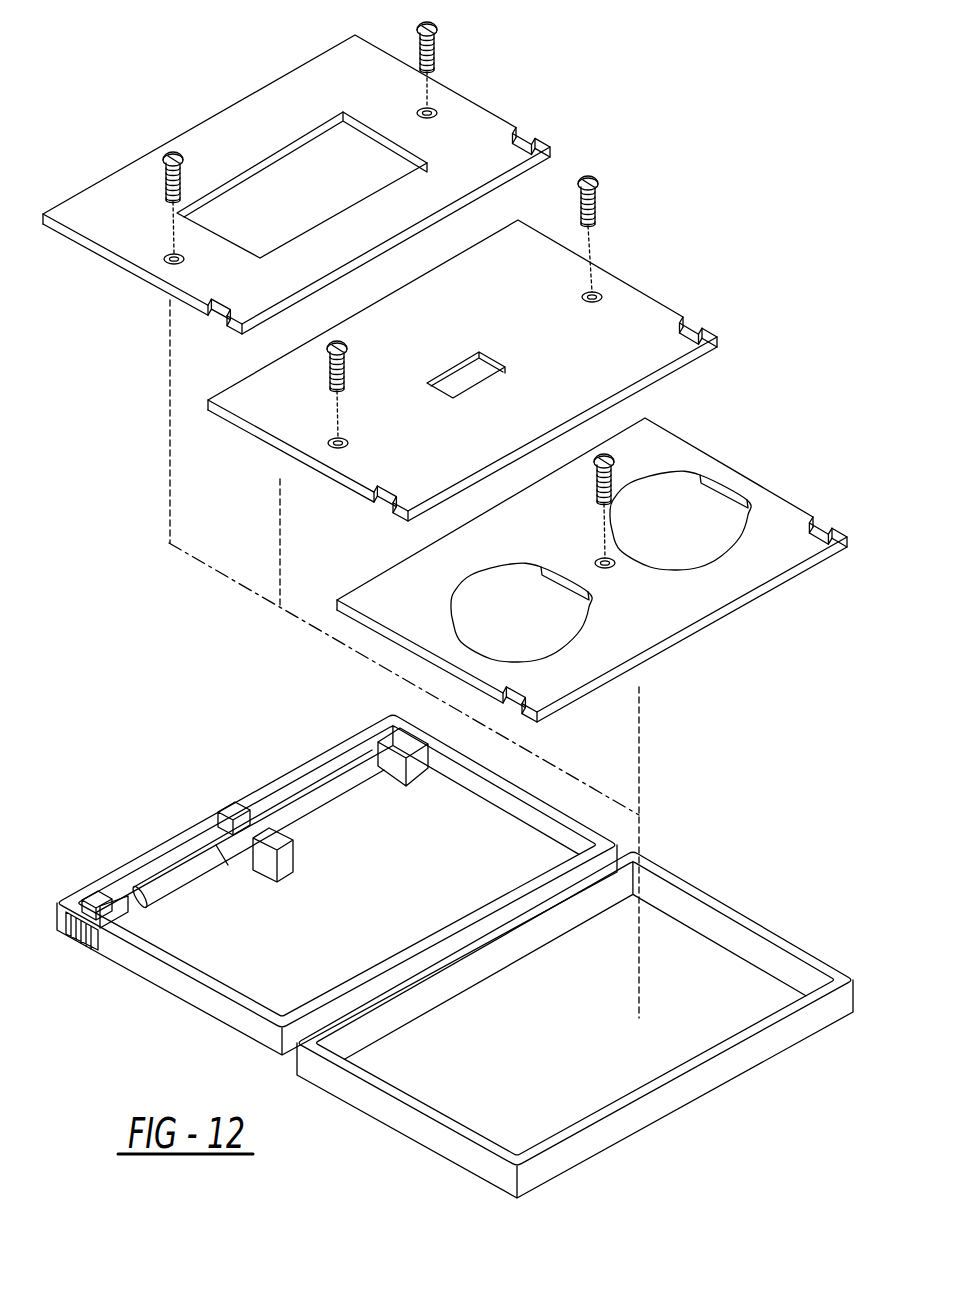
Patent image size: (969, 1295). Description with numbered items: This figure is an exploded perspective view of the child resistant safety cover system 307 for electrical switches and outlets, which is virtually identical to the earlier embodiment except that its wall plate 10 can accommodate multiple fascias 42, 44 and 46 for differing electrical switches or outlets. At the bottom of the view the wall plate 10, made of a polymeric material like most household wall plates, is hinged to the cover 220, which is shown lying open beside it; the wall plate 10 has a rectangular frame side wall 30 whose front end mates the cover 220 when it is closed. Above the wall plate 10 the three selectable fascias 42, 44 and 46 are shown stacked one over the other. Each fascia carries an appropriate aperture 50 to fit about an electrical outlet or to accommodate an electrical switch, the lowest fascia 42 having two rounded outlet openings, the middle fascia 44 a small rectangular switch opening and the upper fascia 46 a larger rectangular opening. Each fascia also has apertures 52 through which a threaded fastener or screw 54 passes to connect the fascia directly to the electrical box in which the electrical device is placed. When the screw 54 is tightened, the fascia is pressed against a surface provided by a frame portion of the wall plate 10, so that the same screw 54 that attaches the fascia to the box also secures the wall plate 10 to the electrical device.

The wall plate 10 is at (710, 887).
The rectangular frame side wall 30 is at (750, 1043).
The fascia 42 is at (743, 473).
The fascia 44 is at (630, 282).
The fascia 46 is at (483, 110).
The aperture 50 is at (262, 168).
The aperture 52 is at (163, 259).
The screw 54 is at (163, 162).
The cover 220 is at (270, 950).
The safety cover system 307 is at (323, 737).